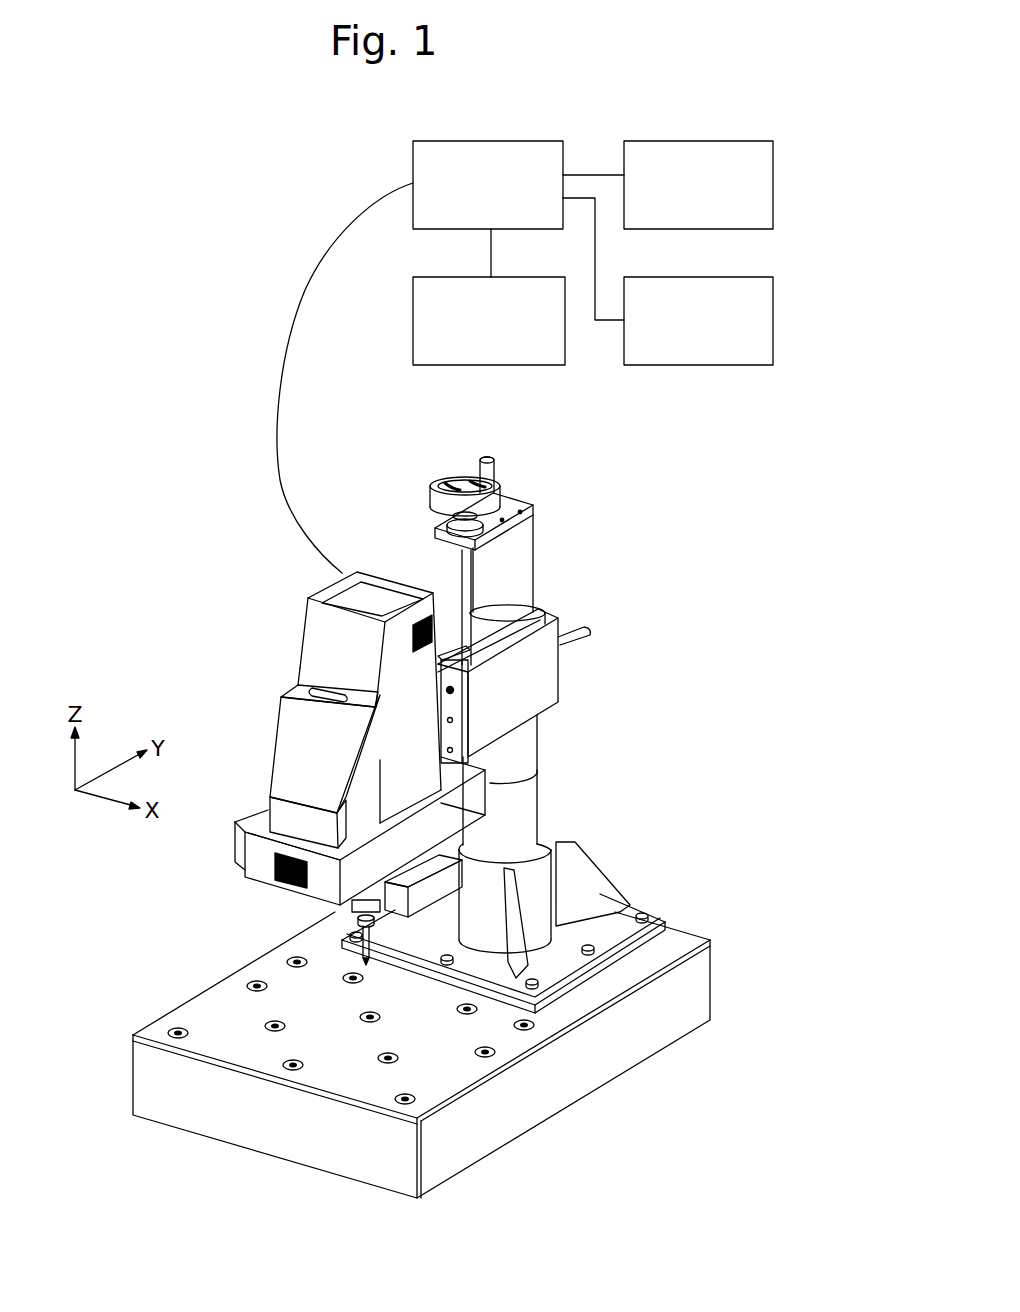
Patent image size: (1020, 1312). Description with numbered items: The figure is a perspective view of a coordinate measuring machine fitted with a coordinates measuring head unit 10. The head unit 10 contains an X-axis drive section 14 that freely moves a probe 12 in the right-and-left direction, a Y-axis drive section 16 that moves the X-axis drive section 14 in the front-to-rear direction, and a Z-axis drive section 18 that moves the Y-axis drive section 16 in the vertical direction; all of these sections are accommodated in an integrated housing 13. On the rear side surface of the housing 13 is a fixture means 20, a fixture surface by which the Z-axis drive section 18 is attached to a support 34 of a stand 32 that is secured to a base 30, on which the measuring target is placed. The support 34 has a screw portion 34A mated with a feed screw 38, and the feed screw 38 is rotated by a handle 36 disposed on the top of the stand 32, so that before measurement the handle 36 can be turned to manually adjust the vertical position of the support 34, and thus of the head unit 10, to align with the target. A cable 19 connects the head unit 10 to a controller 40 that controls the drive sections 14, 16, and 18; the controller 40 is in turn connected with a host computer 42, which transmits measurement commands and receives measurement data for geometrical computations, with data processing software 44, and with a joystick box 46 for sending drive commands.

The coordinates measuring head unit 10 is at (276, 665).
The probe 12 is at (352, 952).
The integrated housing 13 is at (298, 683).
The X-axis drive section 14 is at (235, 845).
The Y-axis drive section 16 is at (242, 874).
The Z-axis drive section 18 is at (330, 590).
The cable 19 is at (309, 278).
The fixture means 20 is at (458, 698).
The base 30 is at (710, 962).
The stand 32 is at (542, 555).
The support 34 is at (560, 673).
The screw portion 34A is at (530, 657).
The handle 36 is at (432, 497).
The feed screw 38 is at (462, 577).
The controller 40 is at (500, 141).
The host computer 42 is at (728, 141).
The data processing software 44 is at (725, 365).
The joystick box 46 is at (532, 365).